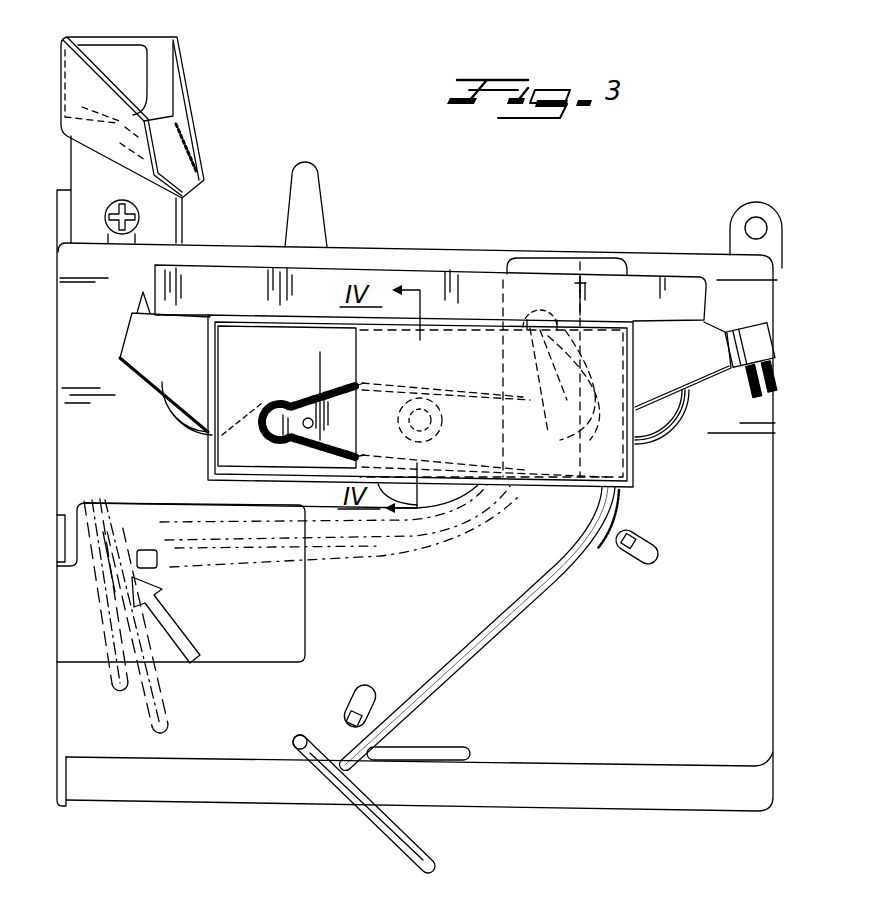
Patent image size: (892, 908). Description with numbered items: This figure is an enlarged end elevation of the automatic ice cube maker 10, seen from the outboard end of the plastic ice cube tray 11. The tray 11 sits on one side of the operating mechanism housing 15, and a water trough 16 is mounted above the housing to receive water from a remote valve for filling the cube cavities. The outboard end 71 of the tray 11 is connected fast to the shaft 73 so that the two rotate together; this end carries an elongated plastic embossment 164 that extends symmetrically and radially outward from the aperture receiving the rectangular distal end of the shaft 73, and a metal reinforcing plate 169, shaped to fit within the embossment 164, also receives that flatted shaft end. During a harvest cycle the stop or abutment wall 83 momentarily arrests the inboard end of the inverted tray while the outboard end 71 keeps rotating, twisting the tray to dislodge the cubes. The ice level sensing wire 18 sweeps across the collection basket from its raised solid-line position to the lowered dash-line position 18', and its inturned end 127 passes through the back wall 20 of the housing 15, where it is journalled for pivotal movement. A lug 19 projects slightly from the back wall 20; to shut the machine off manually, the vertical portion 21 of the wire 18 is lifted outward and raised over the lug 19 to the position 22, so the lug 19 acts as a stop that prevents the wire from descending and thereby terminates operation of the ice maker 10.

The automatic ice cube maker 10 is at (235, 128).
The ice cube tray 11 is at (200, 460).
The operating mechanism housing 15 is at (758, 625).
The water trough 16 is at (160, 37).
The sensing wire 18 is at (302, 609).
The lowered position of sensing wire 18' is at (515, 649).
The lug 19 is at (180, 506).
The back wall 20 is at (636, 686).
The vertical portion of the wire 21 is at (481, 638).
The manual shut-off position of the wire 22 is at (227, 506).
The outboard end of the tray 71 is at (260, 382).
The shaft 73 is at (442, 419).
The stop or abutment wall 83 is at (750, 344).
The inturned end of the sensing wire 127 is at (588, 288).
The plastic embossment 164 is at (323, 393).
The reinforcing plate 169 is at (283, 416).